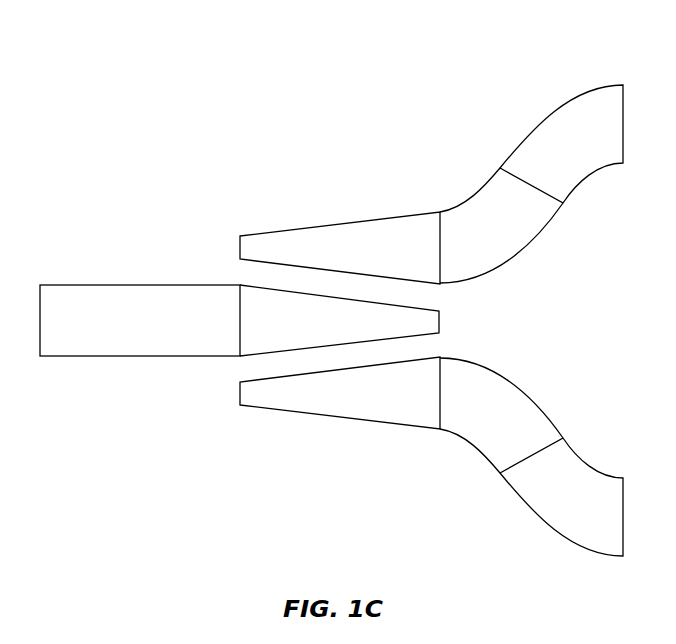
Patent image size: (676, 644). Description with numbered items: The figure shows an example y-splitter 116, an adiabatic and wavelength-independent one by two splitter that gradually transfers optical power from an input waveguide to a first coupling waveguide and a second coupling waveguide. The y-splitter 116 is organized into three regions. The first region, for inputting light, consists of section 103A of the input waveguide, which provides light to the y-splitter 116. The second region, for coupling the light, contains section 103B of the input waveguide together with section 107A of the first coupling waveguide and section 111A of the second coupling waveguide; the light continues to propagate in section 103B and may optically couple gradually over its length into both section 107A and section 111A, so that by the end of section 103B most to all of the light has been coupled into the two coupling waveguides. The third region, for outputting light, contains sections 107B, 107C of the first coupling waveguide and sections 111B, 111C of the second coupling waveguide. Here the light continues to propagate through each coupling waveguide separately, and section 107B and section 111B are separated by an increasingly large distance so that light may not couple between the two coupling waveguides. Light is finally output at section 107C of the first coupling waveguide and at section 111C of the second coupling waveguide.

The y-splitter 116 is at (57, 70).
The section of input waveguide 103A is at (128, 284).
The section of input waveguide 103B is at (442, 317).
The section of first coupling waveguide 107A is at (335, 223).
The section of first coupling waveguide 107B is at (533, 250).
The section of first coupling waveguide 107C is at (550, 110).
The section of second coupling waveguide 111A is at (337, 418).
The section of second coupling waveguide 111B is at (538, 397).
The section of second coupling waveguide 111C is at (602, 472).